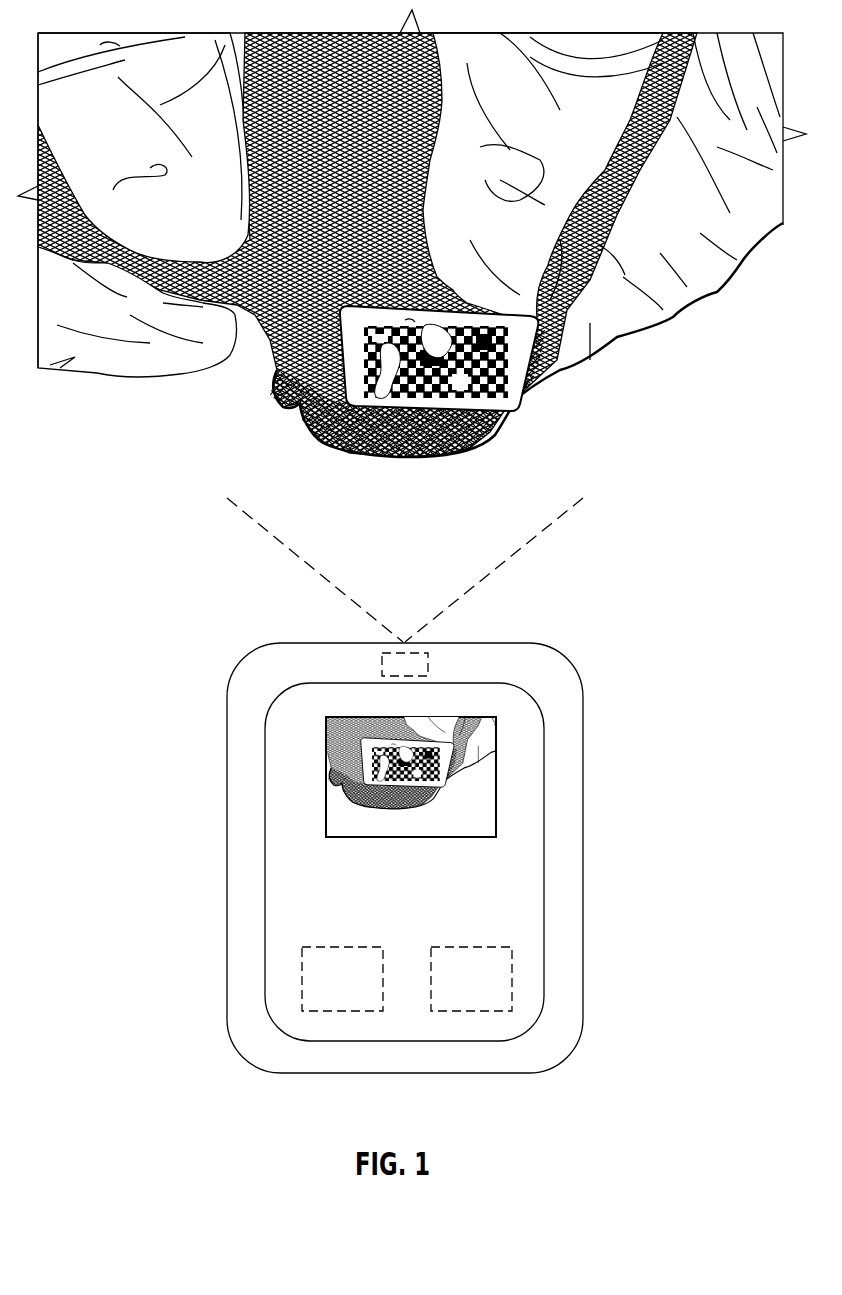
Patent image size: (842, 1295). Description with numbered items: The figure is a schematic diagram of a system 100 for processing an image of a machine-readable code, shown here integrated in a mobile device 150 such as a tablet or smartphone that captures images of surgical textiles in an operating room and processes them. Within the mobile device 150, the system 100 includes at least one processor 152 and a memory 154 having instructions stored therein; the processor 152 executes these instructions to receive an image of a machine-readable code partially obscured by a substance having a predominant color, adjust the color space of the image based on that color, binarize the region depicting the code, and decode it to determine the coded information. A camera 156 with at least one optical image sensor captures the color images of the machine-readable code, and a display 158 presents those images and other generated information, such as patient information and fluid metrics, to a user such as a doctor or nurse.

The system 100 is at (645, 566).
The mobile device 150 is at (583, 775).
The processor 152 is at (302, 969).
The memory 154 is at (512, 963).
The camera 156 is at (382, 668).
The display 158 is at (298, 774).